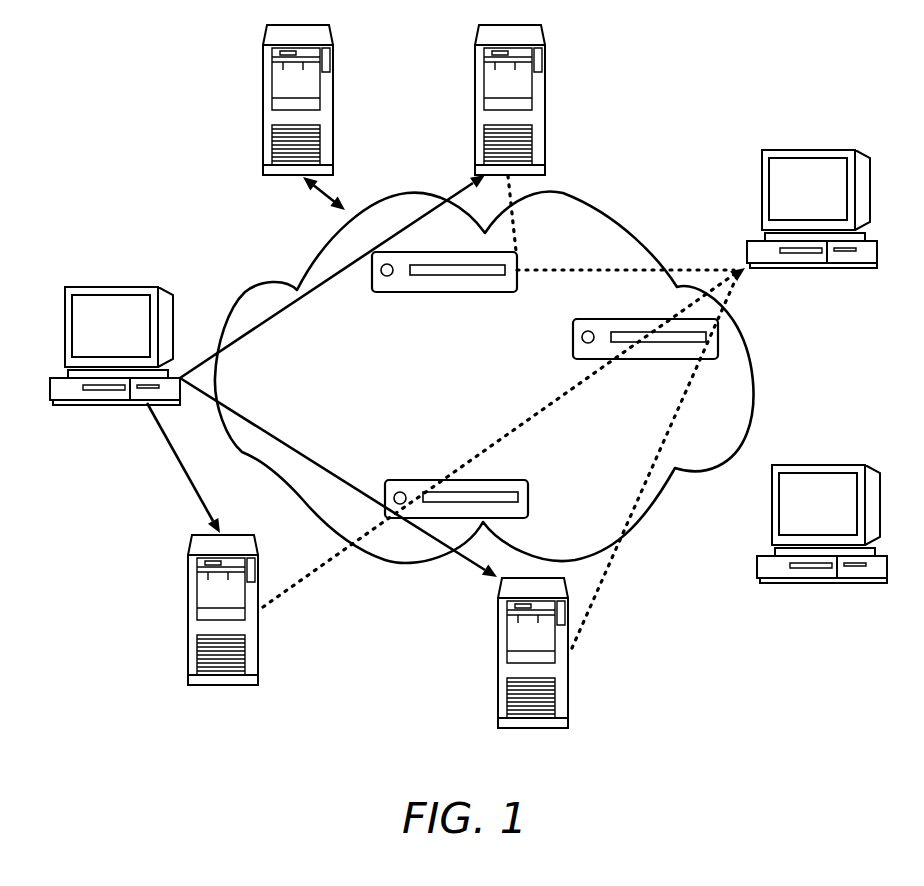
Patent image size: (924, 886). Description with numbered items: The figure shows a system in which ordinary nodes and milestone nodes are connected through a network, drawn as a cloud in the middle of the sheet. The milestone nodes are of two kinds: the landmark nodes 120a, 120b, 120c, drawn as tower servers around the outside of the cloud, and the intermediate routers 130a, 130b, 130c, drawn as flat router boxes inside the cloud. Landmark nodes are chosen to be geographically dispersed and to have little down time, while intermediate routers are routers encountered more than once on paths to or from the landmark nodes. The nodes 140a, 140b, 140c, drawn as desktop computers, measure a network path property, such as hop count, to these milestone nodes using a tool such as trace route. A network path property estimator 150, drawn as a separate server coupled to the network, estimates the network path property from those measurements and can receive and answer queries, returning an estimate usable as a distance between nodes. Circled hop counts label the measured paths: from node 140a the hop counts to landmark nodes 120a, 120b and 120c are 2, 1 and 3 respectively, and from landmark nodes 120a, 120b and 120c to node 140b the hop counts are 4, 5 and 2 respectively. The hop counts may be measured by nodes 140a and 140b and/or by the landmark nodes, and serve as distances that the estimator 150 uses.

The network path property estimator 150 is at (263, 86).
The landmark node 120a is at (545, 84).
The landmark node 120b is at (188, 622).
The landmark node 120c is at (498, 673).
The intermediate router 130a is at (457, 448).
The intermediate router 130b is at (403, 295).
The intermediate router 130c is at (653, 360).
The node 140a is at (132, 250).
The node 140b is at (838, 125).
The node 140c is at (857, 430).
The hop count 1 is at (170, 455).
The hop count 2 is at (300, 280).
The hop count 3 is at (242, 452).
The hop count 4 is at (622, 270).
The hop count 5 is at (550, 420).